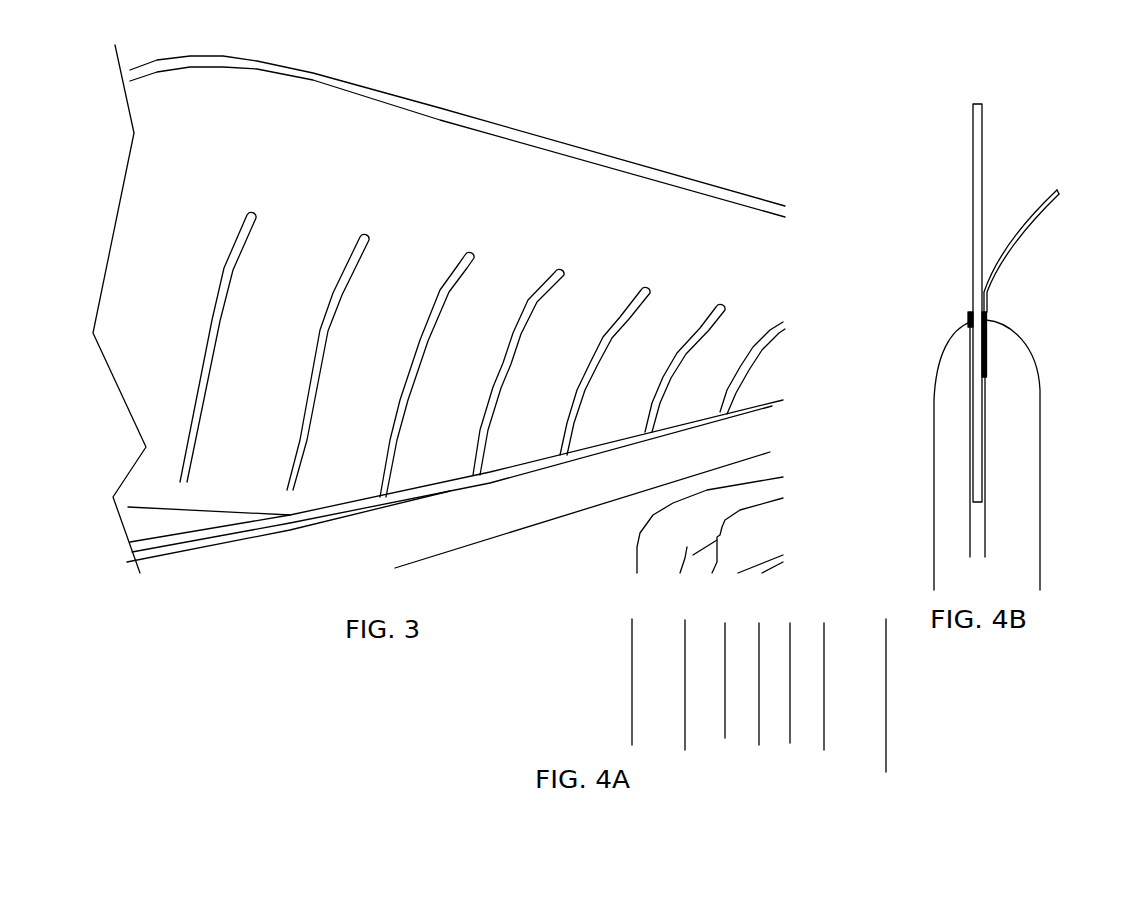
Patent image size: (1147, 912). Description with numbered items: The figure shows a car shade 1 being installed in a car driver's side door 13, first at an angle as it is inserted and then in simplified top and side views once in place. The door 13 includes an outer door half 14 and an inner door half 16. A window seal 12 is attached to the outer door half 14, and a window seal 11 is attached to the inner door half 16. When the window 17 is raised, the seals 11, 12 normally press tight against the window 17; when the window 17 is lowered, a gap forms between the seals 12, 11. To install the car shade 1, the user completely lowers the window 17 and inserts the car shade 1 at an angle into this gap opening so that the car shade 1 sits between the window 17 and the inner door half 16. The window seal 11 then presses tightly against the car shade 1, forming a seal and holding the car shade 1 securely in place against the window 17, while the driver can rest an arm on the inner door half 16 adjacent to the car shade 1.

In FIG. 3, the car shade 1 is at (700, 165).
In FIG. 4B, the car shade 1 is at (1031, 215).
In FIG. 4A, the car shade 1 is at (772, 737).
In FIG. 3, the window seal 11 is at (166, 557).
In FIG. 4B, the window seal 11 is at (985, 314).
In FIG. 4A, the window seal 11 is at (808, 742).
In FIG. 3, the window seal 12 is at (162, 533).
In FIG. 4B, the window seal 12 is at (970, 318).
In FIG. 4A, the window seal 12 is at (705, 737).
In FIG. 3, the car driver's side door 13 is at (365, 565).
In FIG. 4B, the outer door half 14 is at (935, 373).
In FIG. 4A, the outer door half 14 is at (628, 682).
In FIG. 3, the inner door half 16 is at (752, 442).
In FIG. 4B, the inner door half 16 is at (1040, 372).
In FIG. 4A, the inner door half 16 is at (880, 727).
In FIG. 4B, the window 17 is at (972, 197).
In FIG. 4A, the window 17 is at (740, 740).